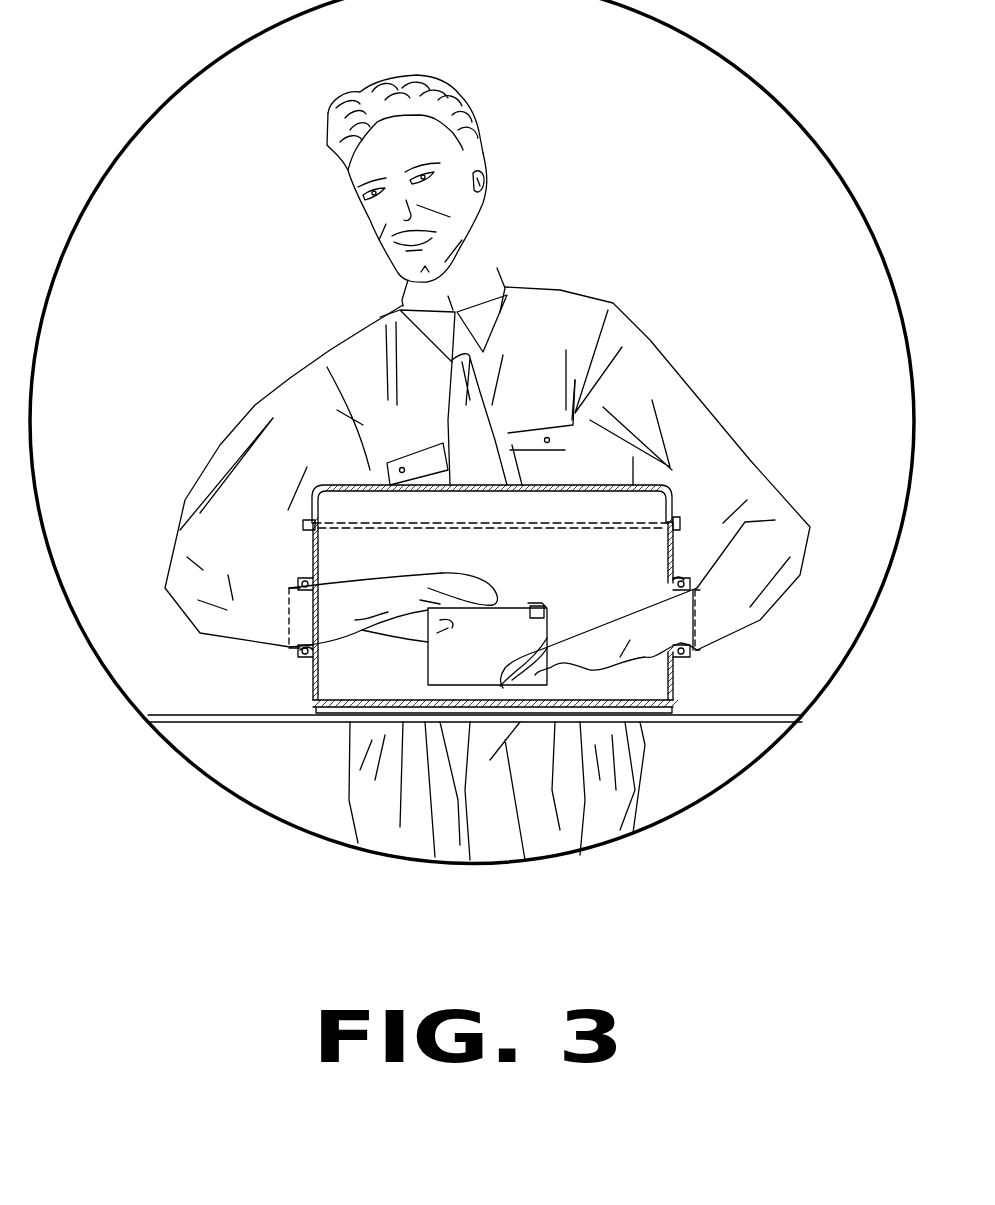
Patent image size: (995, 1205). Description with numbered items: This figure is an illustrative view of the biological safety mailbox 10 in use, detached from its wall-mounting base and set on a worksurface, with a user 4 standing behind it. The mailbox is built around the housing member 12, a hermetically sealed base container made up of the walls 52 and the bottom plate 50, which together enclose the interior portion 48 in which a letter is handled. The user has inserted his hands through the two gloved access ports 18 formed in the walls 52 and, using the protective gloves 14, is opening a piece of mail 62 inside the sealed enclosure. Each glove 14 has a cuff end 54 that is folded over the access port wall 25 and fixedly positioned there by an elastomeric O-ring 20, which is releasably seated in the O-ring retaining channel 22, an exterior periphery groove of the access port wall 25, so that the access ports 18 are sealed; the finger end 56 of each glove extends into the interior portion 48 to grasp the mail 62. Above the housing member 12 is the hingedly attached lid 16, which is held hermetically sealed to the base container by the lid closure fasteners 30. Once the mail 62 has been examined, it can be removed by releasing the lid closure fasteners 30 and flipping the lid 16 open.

The user carrying container 4 is at (246, 362).
The biological safety mailbox 10 is at (517, 551).
The housing member 12 is at (490, 649).
The protective gloves 14 is at (382, 597).
The lid 16 is at (668, 500).
The access port 18 is at (719, 645).
The O-ring 20 is at (670, 667).
The O-ring retaining channel 22 is at (680, 645).
The access port wall 25 is at (668, 583).
The lid closure fasteners 30 is at (477, 472).
The interior portion of housing member 48 is at (313, 555).
The bottom plate of housing member 50 is at (345, 708).
The walls of housing member 52 is at (673, 552).
The cuff end of protective gloves 54 is at (307, 655).
The finger end of protective gloves 56 is at (456, 588).
The mail 62 is at (440, 662).